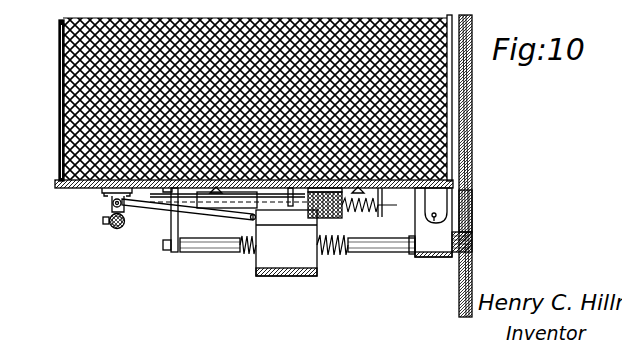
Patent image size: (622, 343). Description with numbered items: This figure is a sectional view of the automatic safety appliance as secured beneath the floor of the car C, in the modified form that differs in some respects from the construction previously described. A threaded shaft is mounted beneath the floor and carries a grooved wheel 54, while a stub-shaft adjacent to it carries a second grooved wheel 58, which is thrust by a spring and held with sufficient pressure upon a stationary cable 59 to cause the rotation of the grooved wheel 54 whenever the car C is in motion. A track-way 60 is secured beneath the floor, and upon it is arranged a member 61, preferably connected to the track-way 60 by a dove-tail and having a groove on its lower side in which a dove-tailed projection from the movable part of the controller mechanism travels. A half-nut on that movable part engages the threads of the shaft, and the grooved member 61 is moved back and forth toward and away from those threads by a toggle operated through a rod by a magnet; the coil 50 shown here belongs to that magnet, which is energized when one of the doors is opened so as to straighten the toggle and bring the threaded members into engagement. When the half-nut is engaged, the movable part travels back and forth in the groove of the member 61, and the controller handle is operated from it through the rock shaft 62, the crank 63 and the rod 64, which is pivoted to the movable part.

The car C is at (237, 119).
The stationary cable 59 is at (471, 160).
The grooved wheel 54 is at (472, 202).
The grooved wheel 58 is at (473, 238).
The coil 50 is at (340, 220).
The track-way 60 is at (207, 197).
The grooved member 61 is at (235, 194).
The rod 64 is at (152, 210).
The crank 63 is at (111, 209).
The rock shaft 62 is at (111, 227).